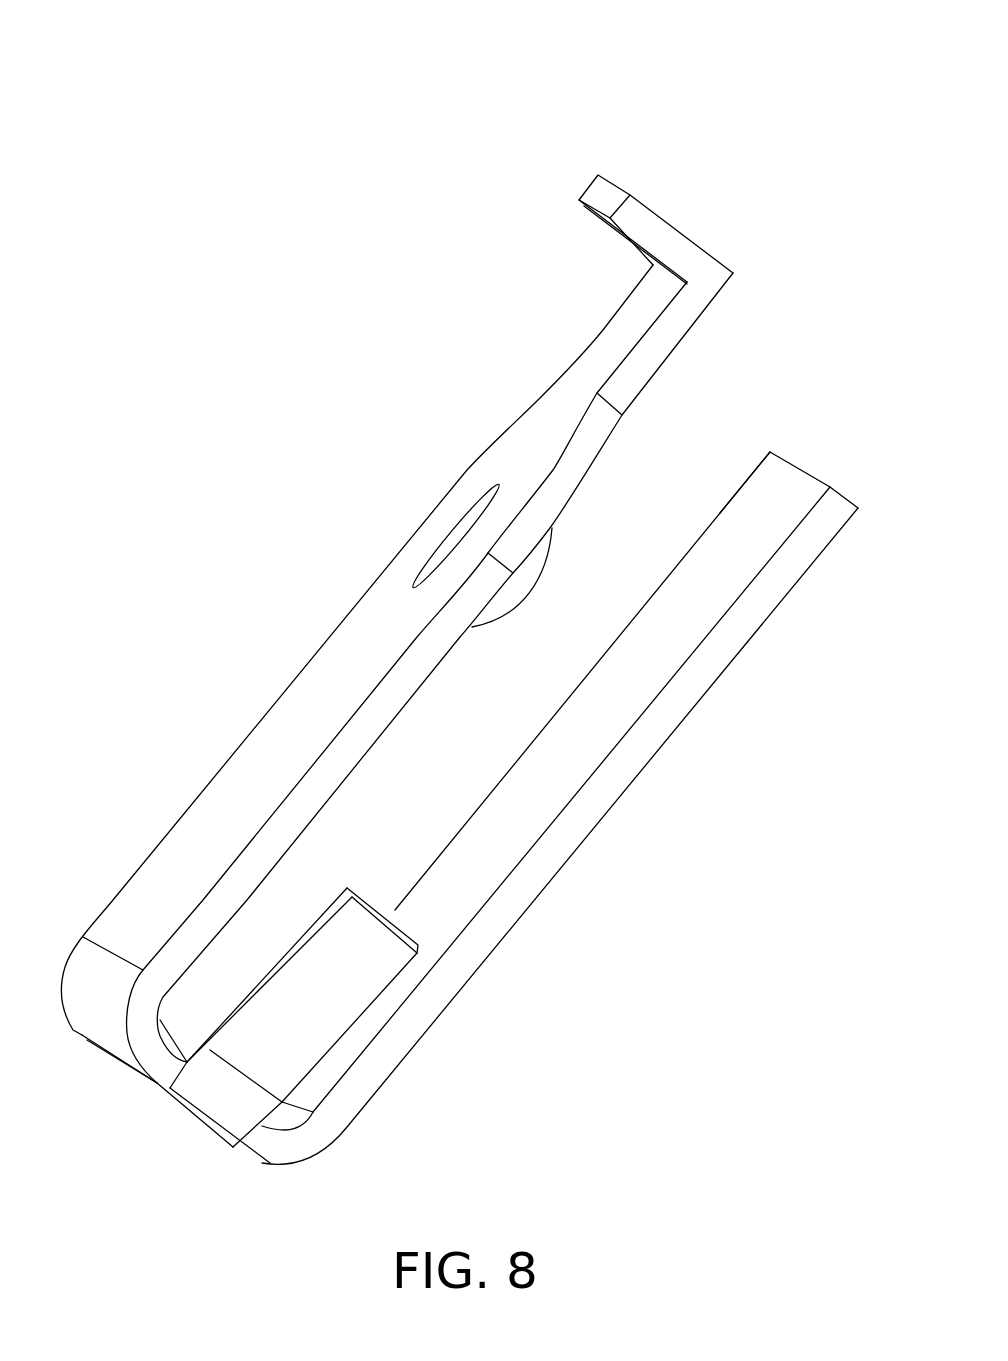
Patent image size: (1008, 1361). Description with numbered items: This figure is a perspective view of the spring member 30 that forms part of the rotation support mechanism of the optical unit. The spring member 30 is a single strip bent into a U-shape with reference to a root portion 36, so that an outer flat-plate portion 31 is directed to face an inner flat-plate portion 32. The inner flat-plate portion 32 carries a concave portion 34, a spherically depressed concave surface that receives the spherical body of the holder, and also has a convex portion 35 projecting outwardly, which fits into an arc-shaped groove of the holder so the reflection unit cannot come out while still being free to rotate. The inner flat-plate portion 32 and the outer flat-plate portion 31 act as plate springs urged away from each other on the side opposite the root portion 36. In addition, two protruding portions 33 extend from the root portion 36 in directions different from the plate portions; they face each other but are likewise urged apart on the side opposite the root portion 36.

The spring member 30 is at (698, 146).
The outer flat-plate portion 31 is at (618, 785).
The inner flat-plate portion 32 is at (297, 708).
The protruding portion 33 is at (320, 888).
The concave portion 34 is at (461, 530).
The convex portion 35 is at (605, 199).
The root portion 36 is at (170, 1103).